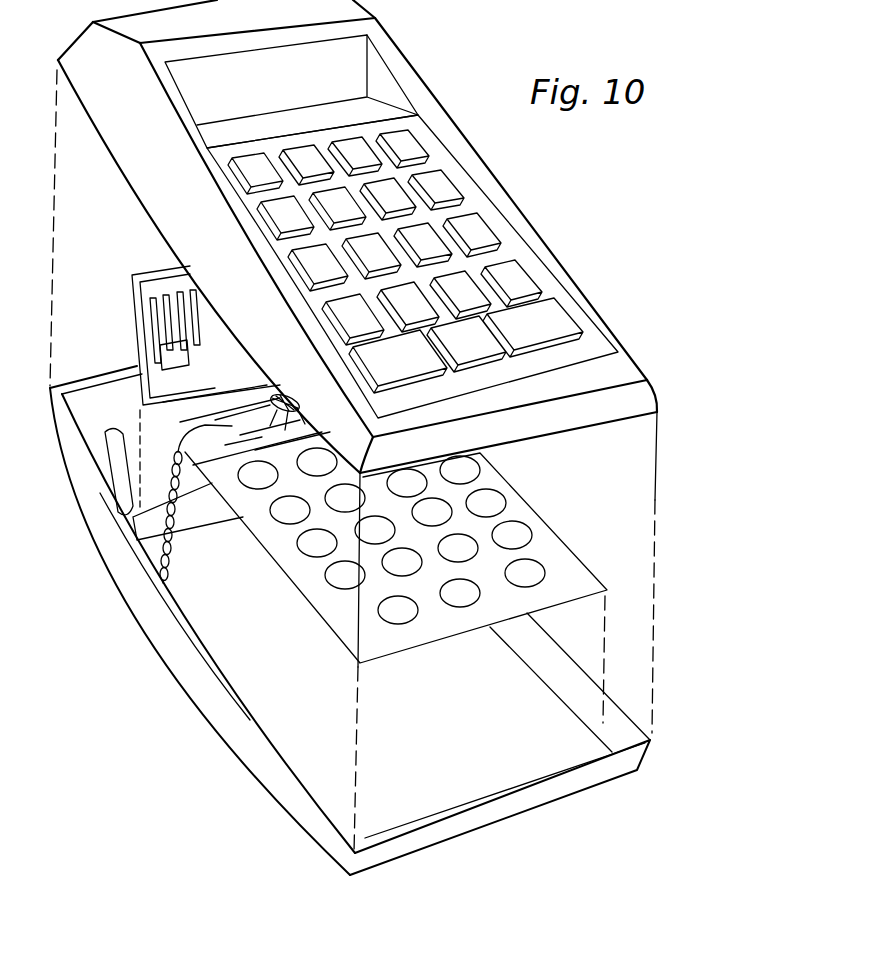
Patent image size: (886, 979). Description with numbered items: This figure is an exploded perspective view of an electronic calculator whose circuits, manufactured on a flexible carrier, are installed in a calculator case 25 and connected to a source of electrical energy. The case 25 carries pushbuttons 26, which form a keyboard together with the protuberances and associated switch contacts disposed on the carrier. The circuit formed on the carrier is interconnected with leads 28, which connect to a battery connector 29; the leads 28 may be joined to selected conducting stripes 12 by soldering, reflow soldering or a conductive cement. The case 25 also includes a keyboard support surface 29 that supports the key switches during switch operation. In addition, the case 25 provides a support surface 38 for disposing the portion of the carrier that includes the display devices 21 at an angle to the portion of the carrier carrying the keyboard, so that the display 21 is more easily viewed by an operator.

The conducting stripes 12 is at (180, 452).
The display devices 21 is at (168, 333).
The case 25 is at (640, 398).
The pushbuttons 26 is at (476, 199).
The leads 28 is at (170, 542).
The battery connector 29 is at (103, 467).
The support surface 38 is at (152, 548).